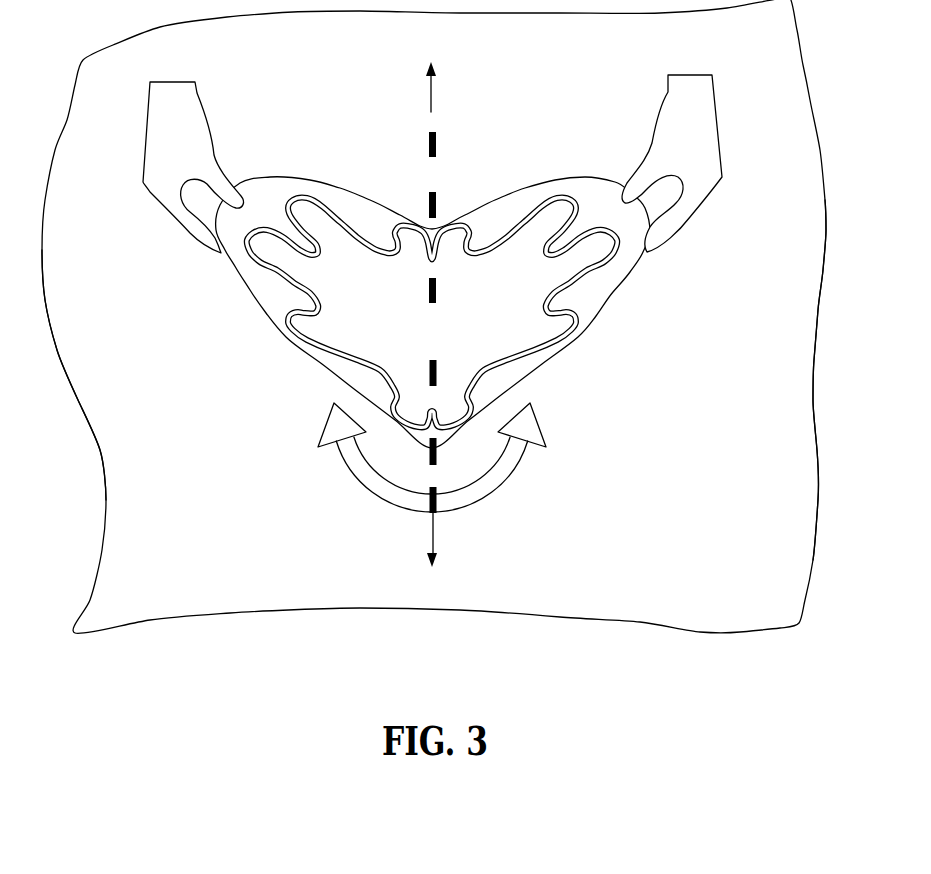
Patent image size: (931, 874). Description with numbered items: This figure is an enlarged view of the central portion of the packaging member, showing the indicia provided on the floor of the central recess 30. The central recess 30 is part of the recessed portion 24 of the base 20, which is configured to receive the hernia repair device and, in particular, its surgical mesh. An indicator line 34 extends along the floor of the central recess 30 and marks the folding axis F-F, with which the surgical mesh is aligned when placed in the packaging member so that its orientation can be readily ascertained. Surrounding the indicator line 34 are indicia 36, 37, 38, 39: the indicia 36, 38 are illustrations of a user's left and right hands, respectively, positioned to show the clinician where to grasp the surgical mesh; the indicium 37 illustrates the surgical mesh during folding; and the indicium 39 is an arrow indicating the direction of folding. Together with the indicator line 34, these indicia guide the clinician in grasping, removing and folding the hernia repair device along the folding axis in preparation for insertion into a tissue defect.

The base 20 is at (787, 592).
The recessed portion 24 is at (123, 525).
The central recess 30 is at (788, 517).
The indicator line 34 is at (435, 143).
The indicium (left hand illustration) 36 is at (160, 180).
The indicium (surgical mesh during folding) 37 is at (247, 308).
The indicium (right hand illustration) 38 is at (703, 180).
The indicium (folding direction arrow) 39 is at (492, 503).